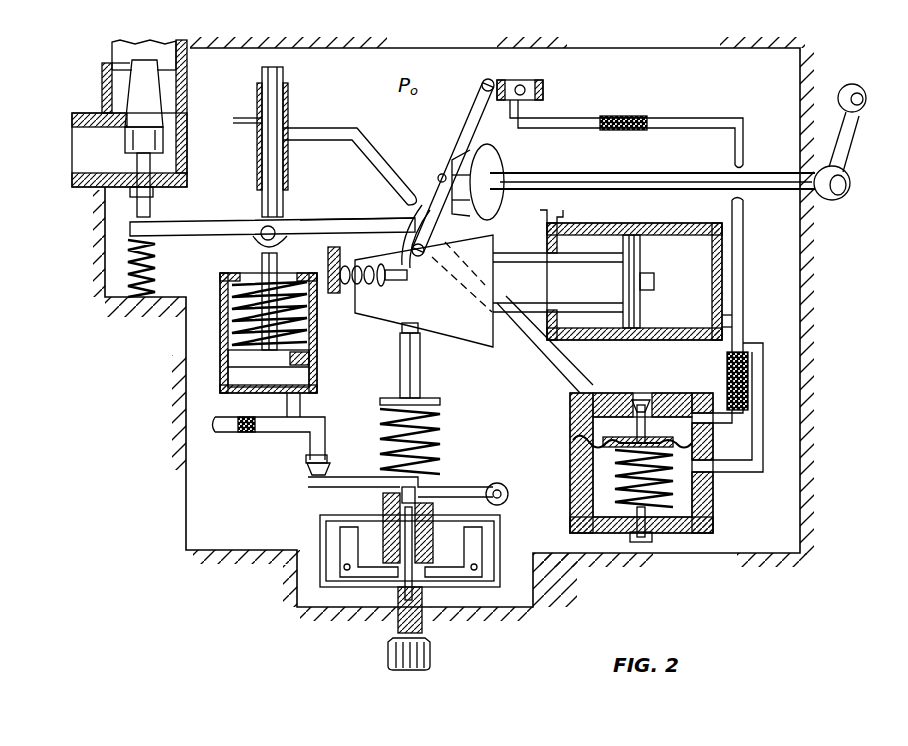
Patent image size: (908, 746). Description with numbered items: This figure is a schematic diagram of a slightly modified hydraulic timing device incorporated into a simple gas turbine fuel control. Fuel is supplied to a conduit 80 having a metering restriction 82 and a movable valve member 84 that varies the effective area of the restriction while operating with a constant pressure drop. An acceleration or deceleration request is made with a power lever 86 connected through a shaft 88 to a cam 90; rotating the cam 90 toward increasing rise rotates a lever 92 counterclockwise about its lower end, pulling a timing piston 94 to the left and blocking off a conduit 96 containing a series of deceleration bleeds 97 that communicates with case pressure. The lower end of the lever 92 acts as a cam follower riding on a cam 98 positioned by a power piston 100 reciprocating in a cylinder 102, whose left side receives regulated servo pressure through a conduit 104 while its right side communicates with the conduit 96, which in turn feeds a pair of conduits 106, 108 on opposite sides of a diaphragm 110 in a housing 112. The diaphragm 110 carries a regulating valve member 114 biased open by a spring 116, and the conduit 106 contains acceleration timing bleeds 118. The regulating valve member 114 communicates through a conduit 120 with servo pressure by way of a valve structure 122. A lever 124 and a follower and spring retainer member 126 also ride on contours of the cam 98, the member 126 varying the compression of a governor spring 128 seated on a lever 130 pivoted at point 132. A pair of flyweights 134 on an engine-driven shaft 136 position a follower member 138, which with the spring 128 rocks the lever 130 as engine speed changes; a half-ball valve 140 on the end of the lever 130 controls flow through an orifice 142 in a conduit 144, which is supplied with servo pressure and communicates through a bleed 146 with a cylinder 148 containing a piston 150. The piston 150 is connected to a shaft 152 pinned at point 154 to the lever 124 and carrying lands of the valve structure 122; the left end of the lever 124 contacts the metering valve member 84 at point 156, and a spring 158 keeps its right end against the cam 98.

The conduit 80 is at (97, 162).
The metering restriction 82 is at (128, 100).
The movable valve member 84 is at (150, 101).
The power lever 86 is at (843, 141).
The shaft 88 is at (767, 182).
The cam 90 is at (492, 165).
The lever 92 is at (472, 118).
The timing piston 94 is at (540, 92).
The conduit 96 is at (610, 116).
The deceleration bleeds 97 is at (635, 117).
The cam 98 is at (410, 291).
The power piston 100 is at (633, 270).
The cylinder 102 is at (722, 275).
The conduit 104 is at (556, 212).
The conduit 106 is at (735, 428).
The conduit 108 is at (740, 470).
The diaphragm 110 is at (598, 440).
The housing 112 is at (590, 463).
The regulating valve member 114 is at (594, 417).
The spring 116 is at (673, 480).
The bleeds 118 is at (748, 372).
The conduit 120 is at (558, 340).
The valve structure 122 is at (284, 105).
The lever 124 is at (333, 223).
The follower and spring retainer member 126 is at (413, 362).
The governor spring 128 is at (440, 445).
The lever 130 is at (455, 483).
The pivot point 132 is at (507, 500).
The flyweights 134 is at (347, 545).
The shaft 136 is at (398, 598).
The follower member 138 is at (380, 498).
The half-ball valve 140 is at (312, 468).
The orifice 142 is at (312, 440).
The conduit 144 is at (262, 425).
The bleed 146 is at (245, 420).
The cylinder 148 is at (316, 372).
The piston 150 is at (312, 357).
The shaft 152 is at (278, 262).
The pivot point 154 is at (262, 239).
The contact point 156 is at (153, 221).
The spring 158 is at (130, 266).